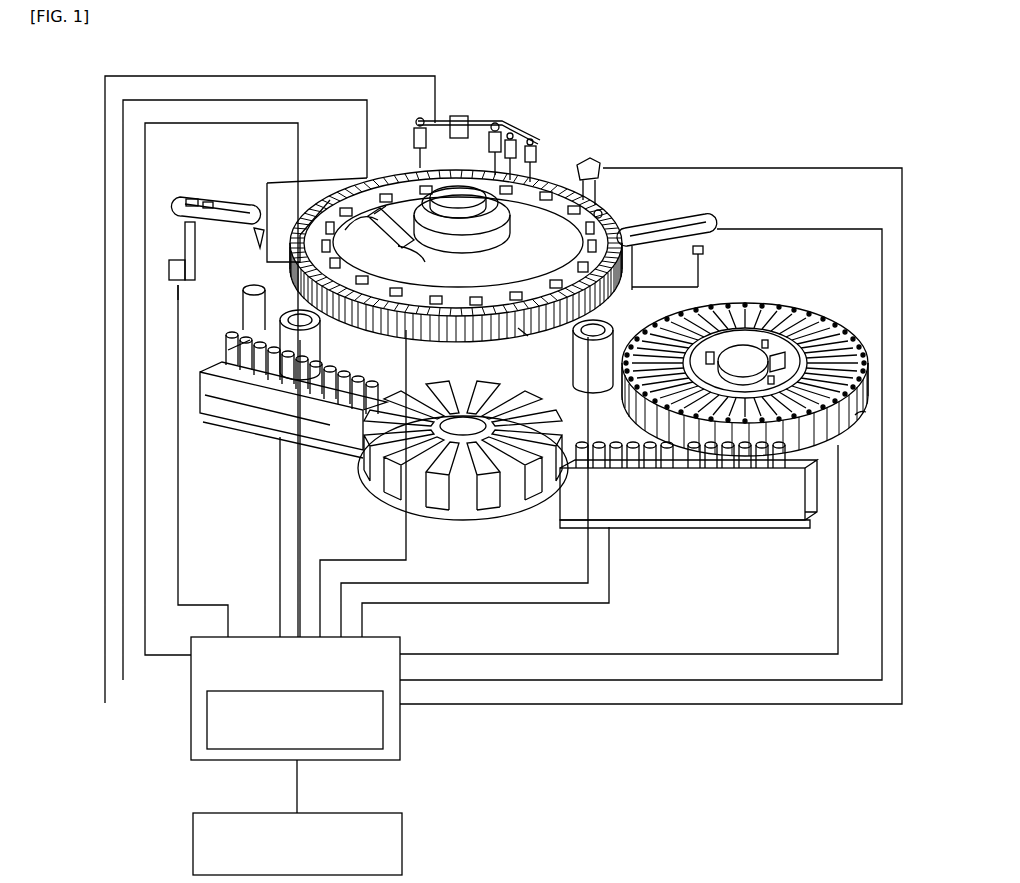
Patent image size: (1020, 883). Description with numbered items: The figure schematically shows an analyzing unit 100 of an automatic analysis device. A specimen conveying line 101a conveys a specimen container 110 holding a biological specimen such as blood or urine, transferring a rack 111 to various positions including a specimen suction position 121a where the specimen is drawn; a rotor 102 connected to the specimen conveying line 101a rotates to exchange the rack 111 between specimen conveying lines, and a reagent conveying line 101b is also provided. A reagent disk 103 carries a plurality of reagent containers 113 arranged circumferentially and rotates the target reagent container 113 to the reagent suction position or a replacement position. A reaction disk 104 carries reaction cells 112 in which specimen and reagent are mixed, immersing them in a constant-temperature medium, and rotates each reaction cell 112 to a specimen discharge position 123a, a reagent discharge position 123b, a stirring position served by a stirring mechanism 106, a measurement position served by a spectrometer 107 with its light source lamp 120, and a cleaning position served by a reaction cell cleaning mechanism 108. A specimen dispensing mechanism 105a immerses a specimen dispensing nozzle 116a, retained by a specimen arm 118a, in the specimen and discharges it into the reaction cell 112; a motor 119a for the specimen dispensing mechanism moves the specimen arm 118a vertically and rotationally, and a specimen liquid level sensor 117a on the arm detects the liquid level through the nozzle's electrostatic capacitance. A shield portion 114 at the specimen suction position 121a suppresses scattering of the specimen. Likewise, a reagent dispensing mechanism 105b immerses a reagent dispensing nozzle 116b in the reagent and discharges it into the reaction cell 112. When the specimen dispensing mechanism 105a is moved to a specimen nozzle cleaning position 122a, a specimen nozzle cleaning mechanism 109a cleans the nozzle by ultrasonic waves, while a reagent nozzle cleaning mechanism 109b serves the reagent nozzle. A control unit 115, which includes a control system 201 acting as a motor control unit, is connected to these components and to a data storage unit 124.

The analyzing unit 100 is at (739, 94).
The specimen conveying line 101a is at (327, 414).
The reagent conveying line 101b is at (688, 510).
The rotor 102 is at (483, 518).
The reagent disk 103 is at (868, 420).
The reaction disk 104 is at (548, 185).
The specimen dispensing mechanism 105a is at (158, 210).
The reagent dispensing mechanism 105b is at (718, 220).
The stirring mechanism 106 is at (594, 160).
The spectrometer 107 is at (318, 178).
The reaction cell cleaning mechanism 108 is at (458, 116).
The specimen nozzle cleaning mechanism 109a is at (320, 338).
The reagent nozzle cleaning mechanism 109b is at (573, 352).
The specimen container 110 is at (412, 380).
The rack 111 is at (738, 468).
The reaction cell 112 is at (604, 214).
The reagent container 113 is at (788, 349).
The shield portion 114 is at (218, 405).
The control unit 115 is at (400, 738).
The specimen dispensing nozzle 116a is at (178, 292).
The reagent dispensing nozzle 116b is at (666, 292).
The specimen liquid level sensor 117a is at (210, 202).
The specimen arm 118a is at (190, 198).
The motor for the specimen dispensing mechanism 119a is at (168, 270).
The light source lamp 120 is at (410, 252).
The specimen suction position 121a is at (252, 400).
The specimen nozzle cleaning position 122a is at (285, 318).
The specimen discharge position 123a is at (266, 262).
The reagent discharge position 123b is at (520, 336).
The data storage unit 124 is at (402, 843).
The control system 201 is at (207, 735).